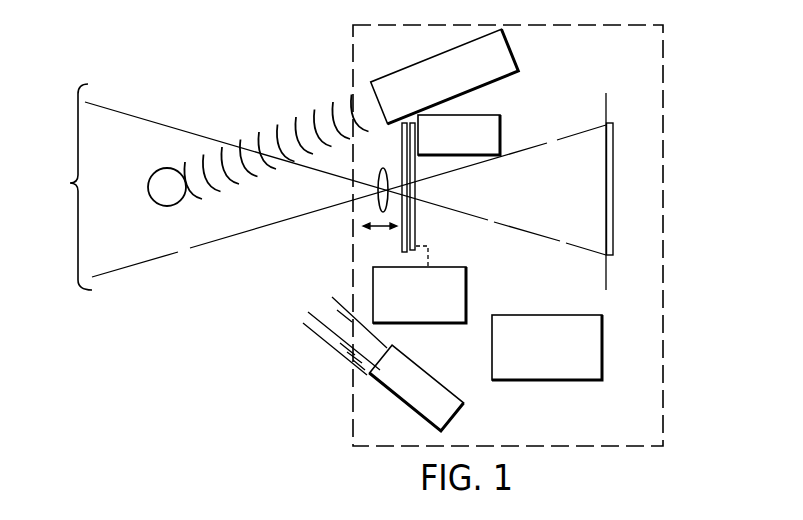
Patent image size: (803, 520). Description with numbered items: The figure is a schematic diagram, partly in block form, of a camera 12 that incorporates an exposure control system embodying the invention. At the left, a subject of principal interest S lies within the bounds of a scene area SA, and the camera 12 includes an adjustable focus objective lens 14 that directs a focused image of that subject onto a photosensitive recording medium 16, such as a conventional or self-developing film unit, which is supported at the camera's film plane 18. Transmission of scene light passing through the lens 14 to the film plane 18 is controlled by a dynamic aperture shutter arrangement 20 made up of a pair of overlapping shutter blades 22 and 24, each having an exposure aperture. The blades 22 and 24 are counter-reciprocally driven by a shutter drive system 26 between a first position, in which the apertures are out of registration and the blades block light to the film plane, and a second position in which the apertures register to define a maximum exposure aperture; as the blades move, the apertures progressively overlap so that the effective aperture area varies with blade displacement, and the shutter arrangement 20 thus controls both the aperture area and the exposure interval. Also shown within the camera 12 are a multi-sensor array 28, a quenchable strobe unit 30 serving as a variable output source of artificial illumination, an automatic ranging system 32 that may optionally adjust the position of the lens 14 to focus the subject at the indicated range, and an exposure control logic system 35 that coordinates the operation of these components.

The camera 12 is at (665, 263).
The adjustable focus objective lens 14 is at (390, 176).
The photosensitive recording medium 16 is at (613, 130).
The film plane 18 is at (607, 102).
The dynamic aperture shutter arrangement 20 is at (419, 227).
The shutter blade 22 is at (402, 245).
The shutter blade 24 is at (416, 188).
The shutter drive system 26 is at (463, 275).
The multi-sensor array 28 is at (490, 115).
The quenchable strobe unit 30 is at (453, 407).
The automatic ranging system 32 is at (457, 44).
The exposure control logic system 35 is at (580, 378).
The subject of principal interest S is at (167, 187).
The scene area SA is at (324, 187).